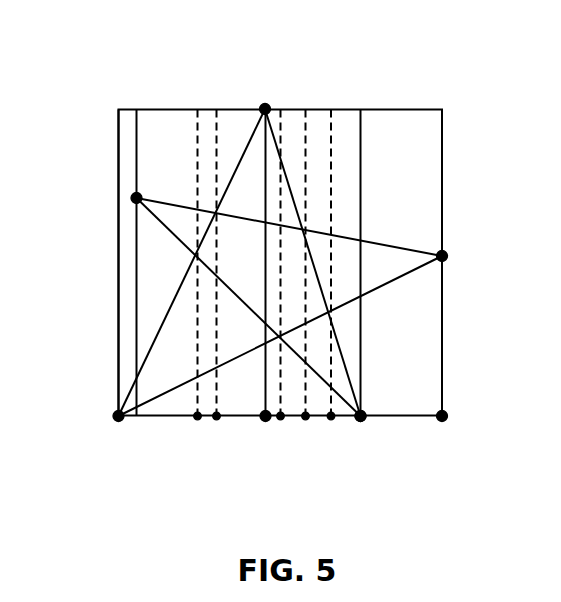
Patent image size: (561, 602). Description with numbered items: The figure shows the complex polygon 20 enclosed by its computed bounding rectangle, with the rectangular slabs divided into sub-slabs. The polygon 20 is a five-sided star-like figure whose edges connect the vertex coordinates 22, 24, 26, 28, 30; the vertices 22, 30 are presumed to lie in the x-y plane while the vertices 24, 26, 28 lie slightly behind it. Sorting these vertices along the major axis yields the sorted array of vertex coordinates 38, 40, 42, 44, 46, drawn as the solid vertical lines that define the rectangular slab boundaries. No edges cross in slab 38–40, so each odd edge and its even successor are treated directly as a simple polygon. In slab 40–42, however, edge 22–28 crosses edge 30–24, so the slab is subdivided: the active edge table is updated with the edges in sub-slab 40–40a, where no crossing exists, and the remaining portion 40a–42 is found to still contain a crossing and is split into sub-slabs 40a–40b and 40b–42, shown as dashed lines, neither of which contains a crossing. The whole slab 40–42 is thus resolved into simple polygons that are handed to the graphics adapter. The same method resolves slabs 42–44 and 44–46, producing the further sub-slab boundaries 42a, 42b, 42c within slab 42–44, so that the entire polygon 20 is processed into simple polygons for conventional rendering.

The complex polygon 20 is at (99, 52).
The vertex coordinate 22 is at (116, 416).
The vertex coordinate 24 is at (360, 416).
The vertex coordinate 26 is at (445, 256).
The vertex coordinate 28 is at (265, 105).
The vertex coordinate 30 is at (137, 203).
The sorted vertex coordinate 38 is at (115, 426).
The sorted vertex coordinate 40 is at (137, 418).
The sub-slab boundary 40a is at (198, 418).
The sub-slab boundary 40b is at (216, 418).
The sorted vertex coordinate 42 is at (266, 418).
The sub-slab boundary 42a is at (280, 418).
The sub-slab boundary 42b is at (306, 418).
The sub-slab boundary 42c is at (331, 418).
The sorted vertex coordinate 44 is at (361, 418).
The sorted vertex coordinate 46 is at (442, 418).